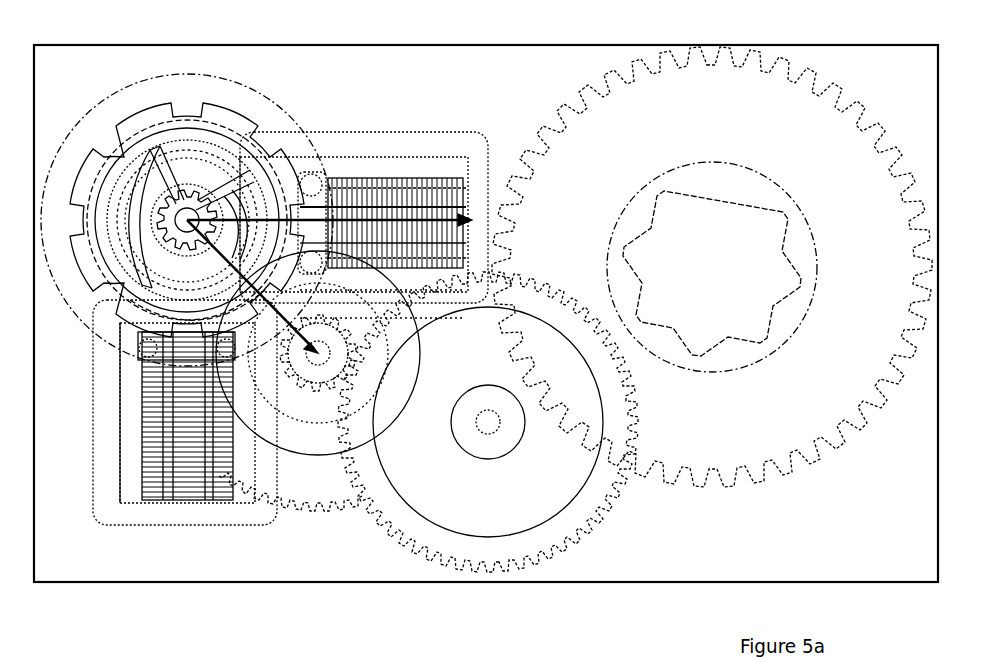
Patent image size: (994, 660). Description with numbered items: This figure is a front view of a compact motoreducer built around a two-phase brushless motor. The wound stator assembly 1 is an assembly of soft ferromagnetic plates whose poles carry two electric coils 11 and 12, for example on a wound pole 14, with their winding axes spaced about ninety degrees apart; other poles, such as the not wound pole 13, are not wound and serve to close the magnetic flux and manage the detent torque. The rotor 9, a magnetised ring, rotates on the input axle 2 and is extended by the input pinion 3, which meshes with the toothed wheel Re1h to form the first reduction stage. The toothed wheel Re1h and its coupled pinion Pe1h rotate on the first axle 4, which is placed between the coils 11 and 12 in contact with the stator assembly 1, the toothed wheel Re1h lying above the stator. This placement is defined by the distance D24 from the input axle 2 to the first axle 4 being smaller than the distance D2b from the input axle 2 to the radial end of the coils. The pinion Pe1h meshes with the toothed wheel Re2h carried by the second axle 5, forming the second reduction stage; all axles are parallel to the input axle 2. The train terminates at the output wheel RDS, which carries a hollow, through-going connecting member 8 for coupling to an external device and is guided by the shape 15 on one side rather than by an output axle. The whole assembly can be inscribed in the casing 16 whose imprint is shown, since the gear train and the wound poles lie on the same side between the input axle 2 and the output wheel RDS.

The wound stator assembly 1 is at (128, 73).
The input axle 2 is at (182, 224).
The input pinion 3 is at (190, 205).
The first axle 4 is at (315, 356).
The second axle 5 is at (486, 424).
The connecting member 8 is at (785, 190).
The rotor 9 is at (257, 160).
The first electric coil 11 is at (148, 477).
The second electric coil 12 is at (418, 188).
The not wound pole 13 is at (103, 148).
The wound pole 14 is at (313, 217).
The guiding shape 15 is at (693, 200).
The casing 16 is at (157, 583).
The distance from input axle to first axle D24 is at (281, 218).
The distance from input axle to radial end of coils D2b is at (352, 217).
The pinion Pe1h is at (327, 372).
The toothed wheel Re1h is at (335, 473).
The toothed wheel Re2h is at (467, 543).
The output wheel RDS is at (785, 425).